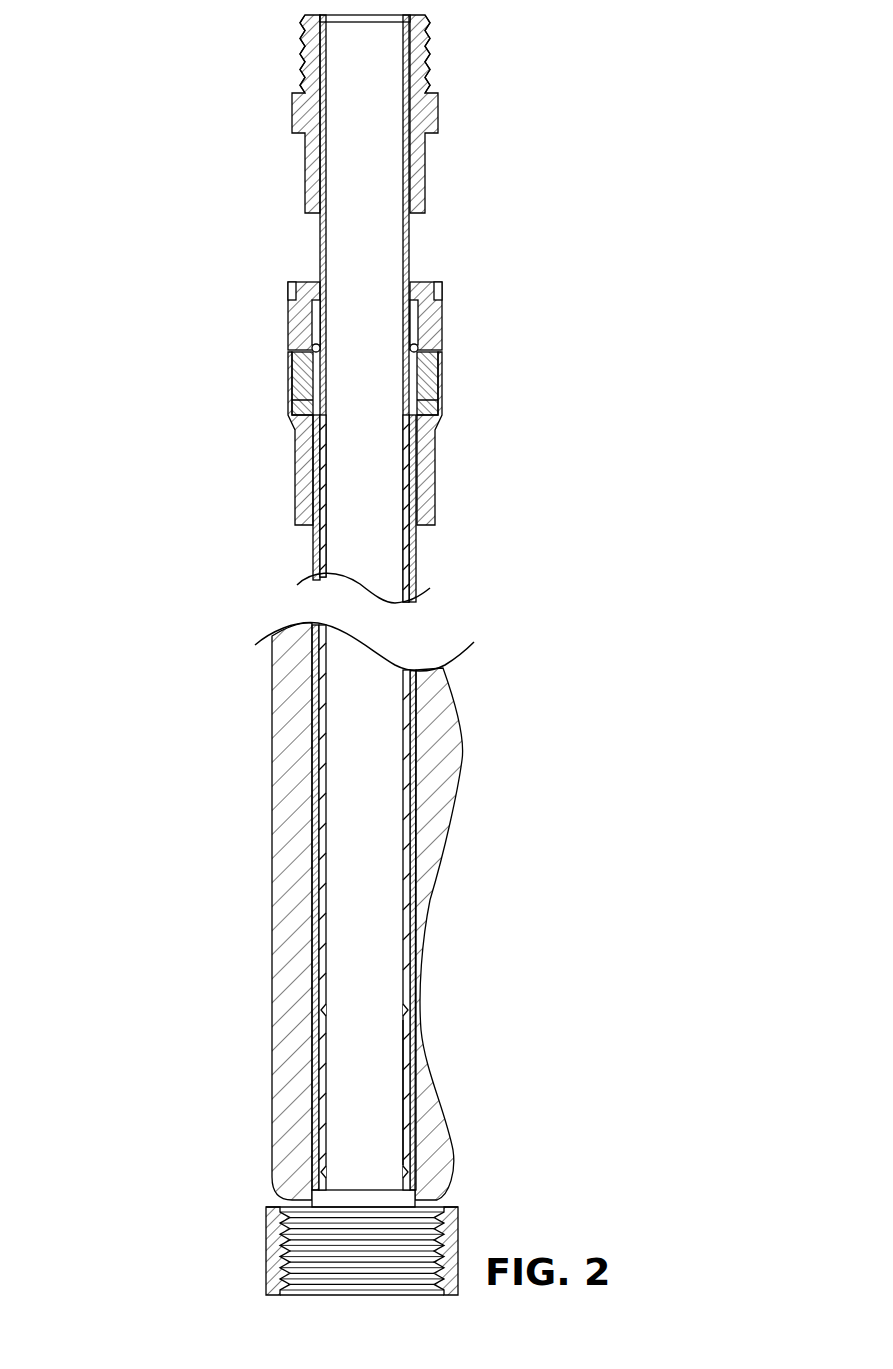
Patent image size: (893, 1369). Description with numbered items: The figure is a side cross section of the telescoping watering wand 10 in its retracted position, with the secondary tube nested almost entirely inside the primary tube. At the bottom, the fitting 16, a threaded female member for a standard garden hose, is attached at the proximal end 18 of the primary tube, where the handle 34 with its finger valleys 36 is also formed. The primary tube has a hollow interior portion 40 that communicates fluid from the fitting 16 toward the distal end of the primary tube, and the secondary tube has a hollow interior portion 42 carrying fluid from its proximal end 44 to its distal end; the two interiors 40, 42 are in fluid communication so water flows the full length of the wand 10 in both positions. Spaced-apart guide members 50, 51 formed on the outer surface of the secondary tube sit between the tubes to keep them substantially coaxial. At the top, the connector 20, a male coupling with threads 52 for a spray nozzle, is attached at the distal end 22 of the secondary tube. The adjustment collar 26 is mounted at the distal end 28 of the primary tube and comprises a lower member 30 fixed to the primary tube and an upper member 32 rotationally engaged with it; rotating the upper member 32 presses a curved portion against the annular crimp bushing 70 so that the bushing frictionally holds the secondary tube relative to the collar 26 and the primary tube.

The telescoping watering wand 10 is at (150, 94).
The fitting 16 is at (455, 1236).
The proximal end of primary tube 18 is at (418, 1138).
The connector 20 is at (395, 108).
The distal end of secondary tube 22 is at (424, 66).
The adjustment collar 26 is at (392, 394).
The distal end of primary tube 28 is at (413, 447).
The lower member 30 is at (437, 492).
The upper member 32 is at (438, 322).
The handle 34 is at (272, 900).
The valleys 36 is at (423, 952).
The hollow interior portion of primary tube 40 is at (375, 838).
The hollow interior portion of secondary tube 42 is at (375, 252).
The proximal end of secondary tube 44 is at (405, 1092).
The guide member 50 is at (405, 1173).
The guide member 51 is at (405, 1010).
The threads 52 is at (425, 30).
The crimp bushing 70 is at (317, 308).